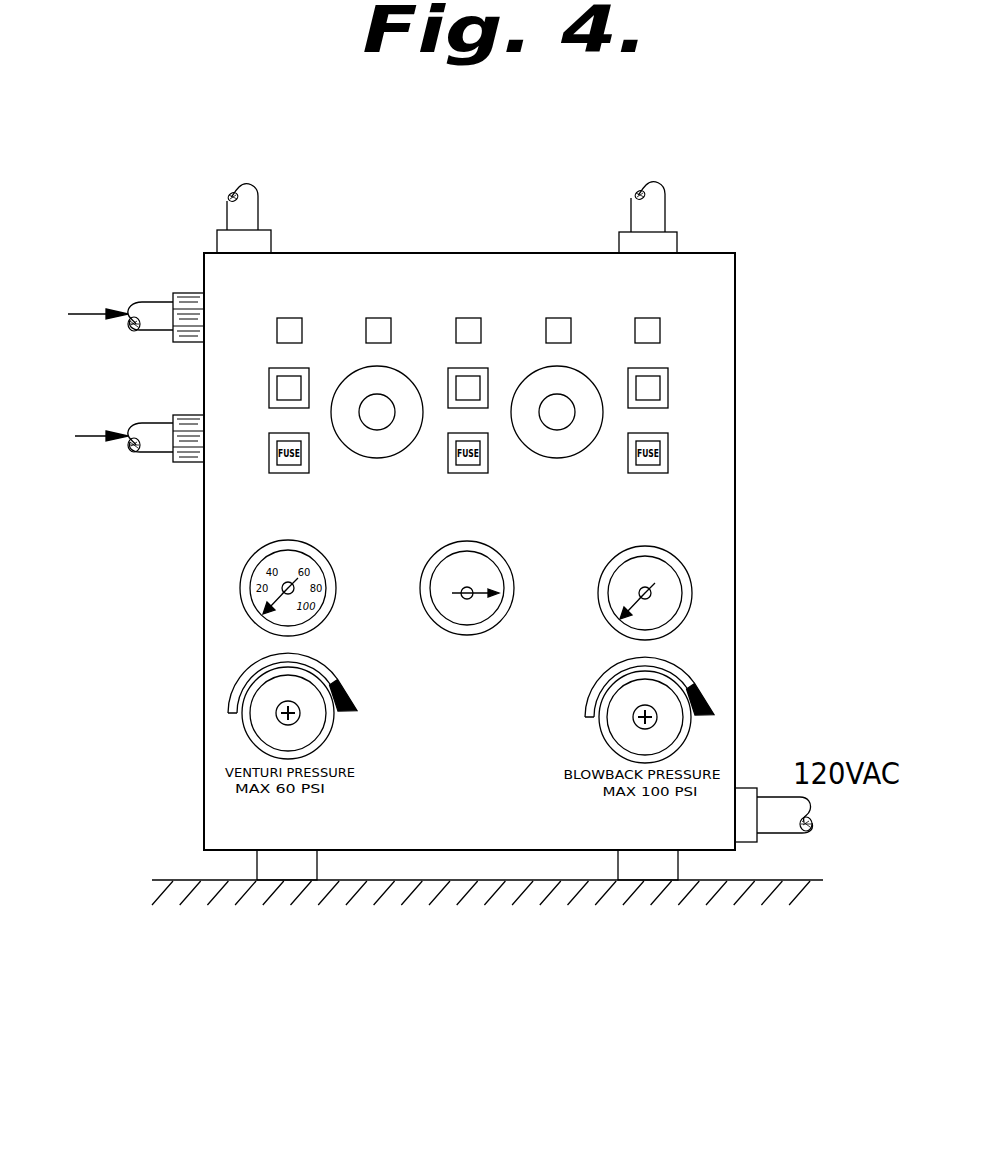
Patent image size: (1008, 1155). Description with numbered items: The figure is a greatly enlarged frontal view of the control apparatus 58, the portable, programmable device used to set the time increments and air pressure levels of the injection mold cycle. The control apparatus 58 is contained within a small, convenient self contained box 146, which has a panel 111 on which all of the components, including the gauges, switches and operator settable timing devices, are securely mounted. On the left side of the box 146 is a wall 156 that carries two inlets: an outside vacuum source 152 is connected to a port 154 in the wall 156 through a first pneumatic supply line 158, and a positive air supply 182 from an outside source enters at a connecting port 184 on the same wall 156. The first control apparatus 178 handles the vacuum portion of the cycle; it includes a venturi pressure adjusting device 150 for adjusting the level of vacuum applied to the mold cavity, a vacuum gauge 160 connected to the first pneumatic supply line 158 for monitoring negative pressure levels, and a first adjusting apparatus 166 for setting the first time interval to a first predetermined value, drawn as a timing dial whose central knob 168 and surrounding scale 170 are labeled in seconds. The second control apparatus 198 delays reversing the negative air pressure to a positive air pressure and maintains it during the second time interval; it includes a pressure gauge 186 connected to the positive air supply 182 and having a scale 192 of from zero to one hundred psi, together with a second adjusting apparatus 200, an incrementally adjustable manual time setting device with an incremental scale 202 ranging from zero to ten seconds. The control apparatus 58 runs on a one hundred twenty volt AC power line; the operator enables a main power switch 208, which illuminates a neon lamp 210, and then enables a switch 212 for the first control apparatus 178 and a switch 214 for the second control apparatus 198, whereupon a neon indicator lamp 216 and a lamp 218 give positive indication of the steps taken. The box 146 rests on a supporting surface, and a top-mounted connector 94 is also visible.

The control apparatus 58 is at (633, 903).
The vacuum tube connector cable 94 is at (668, 210).
The panel 111 is at (455, 824).
The self contained box 146 is at (222, 852).
The venturi pressure adjusting device 150 is at (248, 733).
The outside vacuum source 152 is at (90, 438).
The port 154 is at (186, 461).
The wall 156 is at (204, 360).
The first pneumatic supply line 158 is at (135, 423).
The vacuum gauge 160 is at (424, 601).
The first adjusting apparatus 166 is at (413, 381).
The timer dial knob 168 is at (387, 404).
The timer dial scale 170 is at (352, 448).
The first control apparatus 178 is at (220, 681).
The positive air supply 182 is at (88, 312).
The connecting port 184 is at (173, 293).
The pressure gauge 186 is at (690, 586).
The scale 192 is at (668, 617).
The second control apparatus 198 is at (716, 665).
The second adjusting apparatus 200 is at (590, 448).
The incremental scale 202 is at (582, 382).
The main power switch 208 is at (487, 368).
The neon lamp 210 is at (468, 318).
The switch 212 is at (269, 378).
The switch 214 is at (668, 397).
The neon indicator lamp 216 is at (302, 320).
The lamp 218 is at (660, 330).